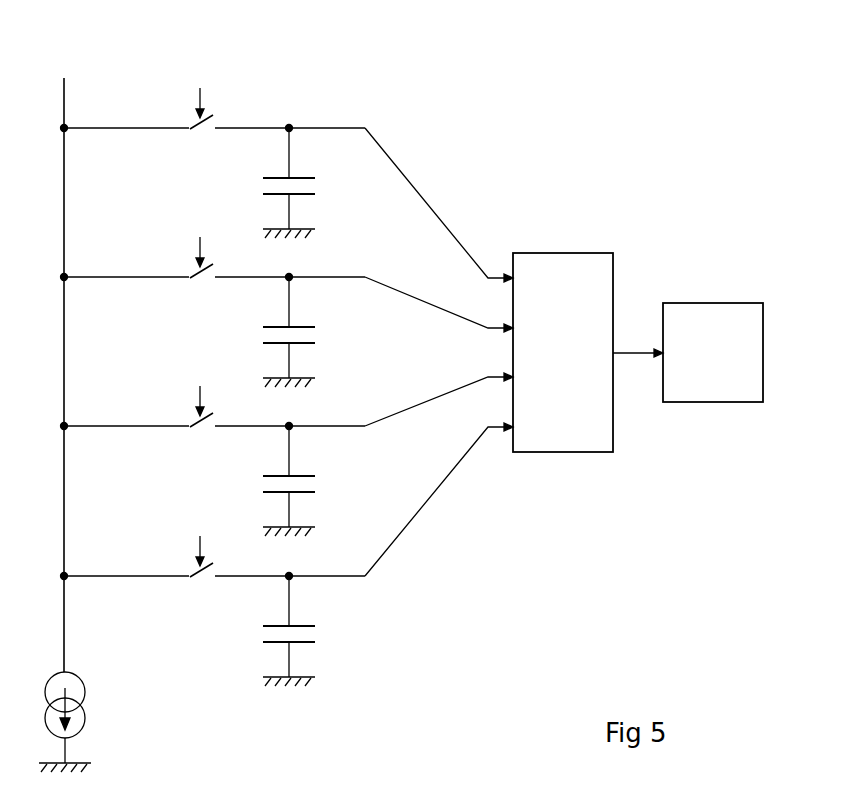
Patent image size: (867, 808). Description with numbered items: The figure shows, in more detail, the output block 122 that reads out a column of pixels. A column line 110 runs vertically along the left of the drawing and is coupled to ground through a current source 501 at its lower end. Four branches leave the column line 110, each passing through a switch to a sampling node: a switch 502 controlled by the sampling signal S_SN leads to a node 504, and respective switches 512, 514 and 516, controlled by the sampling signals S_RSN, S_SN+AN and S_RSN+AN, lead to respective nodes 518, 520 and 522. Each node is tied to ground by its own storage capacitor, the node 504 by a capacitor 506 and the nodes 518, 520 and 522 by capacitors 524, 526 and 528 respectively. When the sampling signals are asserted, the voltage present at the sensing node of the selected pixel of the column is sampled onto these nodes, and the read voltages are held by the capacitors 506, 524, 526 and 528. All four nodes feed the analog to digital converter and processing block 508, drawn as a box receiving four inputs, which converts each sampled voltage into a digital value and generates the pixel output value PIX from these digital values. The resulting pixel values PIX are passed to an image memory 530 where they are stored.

The column line 110 is at (66, 84).
The output block 122 is at (543, 73).
The current source 501 is at (85, 717).
The switch 502 is at (199, 133).
The node 504 is at (291, 127).
The capacitor 506 is at (308, 185).
The analog to digital converter and processing block 508 is at (572, 268).
The switch 512 is at (199, 282).
The switch 514 is at (199, 431).
The switch 516 is at (199, 581).
The node 518 is at (291, 276).
The node 520 is at (291, 425).
The node 522 is at (291, 575).
The capacitor 524 is at (308, 334).
The capacitor 526 is at (308, 483).
The capacitor 528 is at (308, 633).
The image memory 530 is at (710, 313).